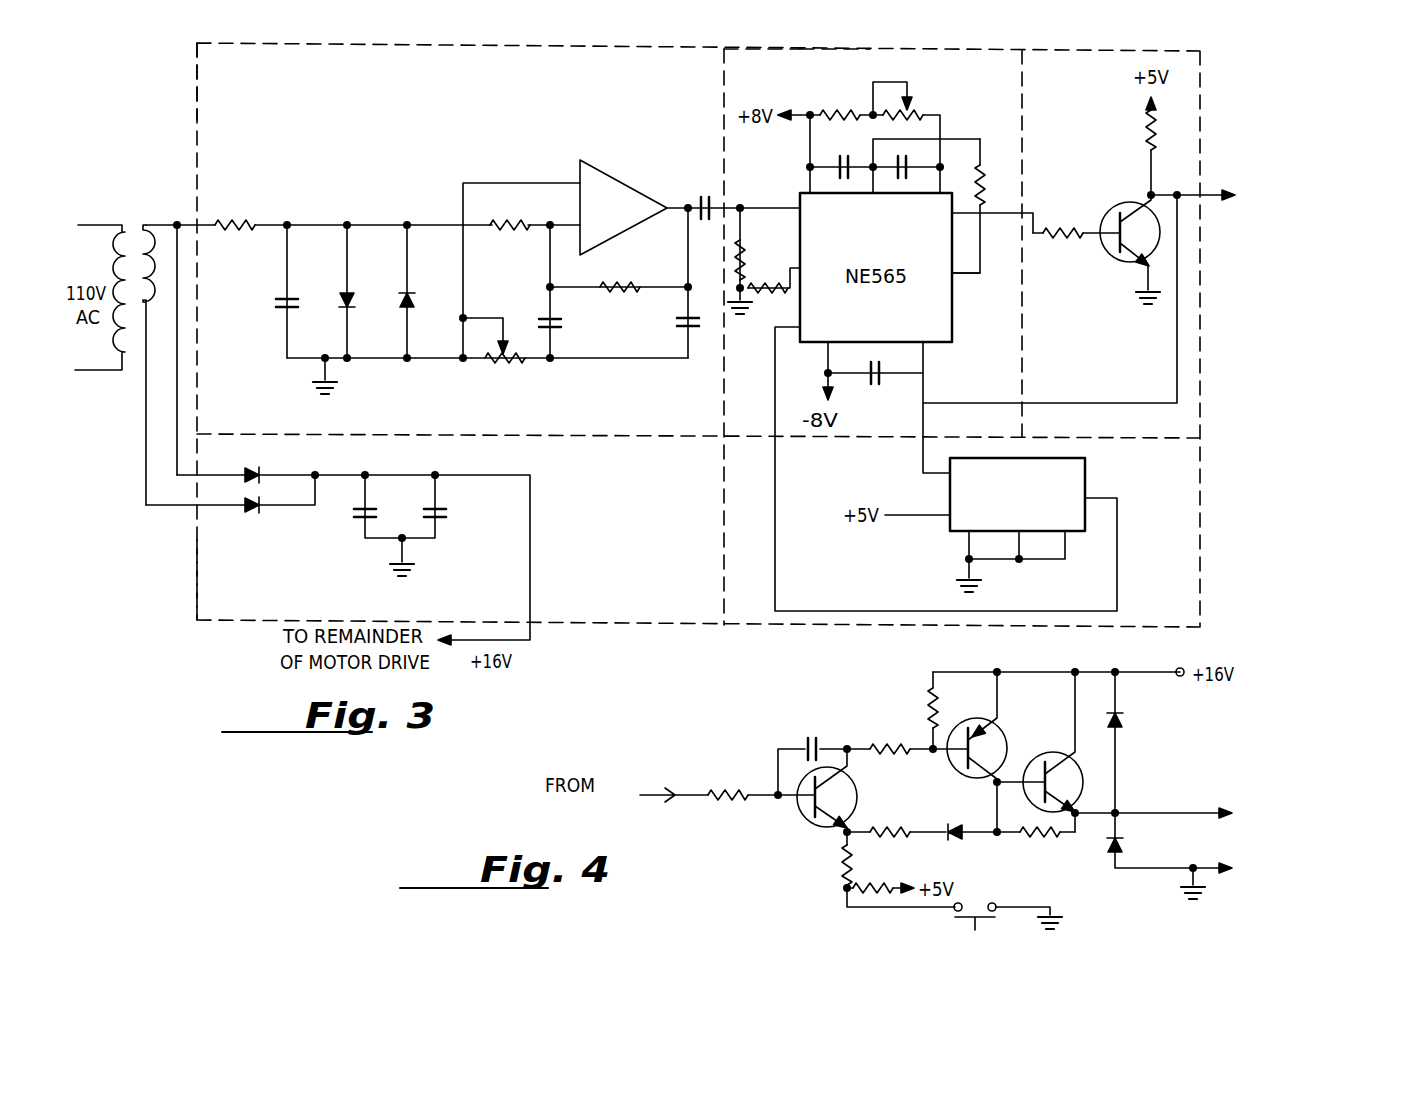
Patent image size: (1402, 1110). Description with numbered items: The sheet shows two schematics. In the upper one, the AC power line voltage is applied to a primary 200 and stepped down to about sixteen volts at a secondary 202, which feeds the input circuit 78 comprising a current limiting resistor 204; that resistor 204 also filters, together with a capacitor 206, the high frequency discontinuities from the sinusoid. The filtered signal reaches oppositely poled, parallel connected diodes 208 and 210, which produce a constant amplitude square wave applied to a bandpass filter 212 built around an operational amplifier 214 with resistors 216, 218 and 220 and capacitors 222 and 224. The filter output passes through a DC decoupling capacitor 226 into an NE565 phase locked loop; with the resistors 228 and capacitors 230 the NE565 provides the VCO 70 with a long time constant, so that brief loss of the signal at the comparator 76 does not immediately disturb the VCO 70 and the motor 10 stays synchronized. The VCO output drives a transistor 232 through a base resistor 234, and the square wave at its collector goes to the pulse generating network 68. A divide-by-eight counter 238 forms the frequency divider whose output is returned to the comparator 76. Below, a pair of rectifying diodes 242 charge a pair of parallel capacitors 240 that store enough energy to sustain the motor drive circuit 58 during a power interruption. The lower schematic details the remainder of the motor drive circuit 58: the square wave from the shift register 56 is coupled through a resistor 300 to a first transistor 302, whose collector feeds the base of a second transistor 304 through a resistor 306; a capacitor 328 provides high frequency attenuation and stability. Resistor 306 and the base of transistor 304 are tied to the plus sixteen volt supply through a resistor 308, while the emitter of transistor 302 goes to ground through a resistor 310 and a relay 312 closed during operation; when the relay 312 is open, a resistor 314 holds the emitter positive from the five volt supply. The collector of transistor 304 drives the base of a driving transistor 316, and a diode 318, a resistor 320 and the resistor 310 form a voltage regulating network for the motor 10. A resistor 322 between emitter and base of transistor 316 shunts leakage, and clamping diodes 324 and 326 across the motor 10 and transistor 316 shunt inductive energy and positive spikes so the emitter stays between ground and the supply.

In FIG. 3, the motor drive circuit 58 is at (192, 563).
In FIG. 3, the input circuit 78 is at (195, 87).
In FIG. 3, the comparator 76 is at (836, 47).
In FIG. 3, the VCO 70 is at (868, 47).
In FIG. 3, the primary 200 is at (128, 228).
In FIG. 3, the secondary 202 is at (140, 228).
In FIG. 3, the current limiting resistor 204 is at (252, 220).
In FIG. 3, the capacitor 206 is at (290, 298).
In FIG. 3, the diode 208 is at (352, 298).
In FIG. 3, the diode 210 is at (412, 298).
In FIG. 3, the bandpass filter 212 is at (559, 161).
In FIG. 3, the operational amplifier 214 is at (613, 178).
In FIG. 3, the resistor 216 is at (508, 232).
In FIG. 3, the resistor 218 is at (514, 366).
In FIG. 3, the resistor 220 is at (626, 296).
In FIG. 3, the capacitor 222 is at (560, 324).
In FIG. 3, the capacitor 224 is at (690, 338).
In FIG. 3, the DC decoupling capacitor 226 is at (702, 200).
In FIG. 3, the resistors 228 is at (756, 286).
In FIG. 3, the capacitors 230 is at (884, 158).
In FIG. 3, the transistor 232 is at (1112, 214).
In FIG. 3, the base resistor 234 is at (1060, 246).
In FIG. 3, the divide-by-eight counter 238 is at (1095, 486).
In FIG. 3, the parallel capacitors 240 is at (432, 505).
In FIG. 3, the rectifying diodes 242 is at (254, 474).
In FIG. 3, the pulse generating network 68 is at (1313, 212).
In FIG. 4, the shift register 56 is at (576, 813).
In FIG. 4, the motor 10 is at (1286, 841).
In FIG. 4, the resistor 300 is at (731, 784).
In FIG. 4, the first transistor 302 is at (808, 820).
In FIG. 4, the second transistor 304 is at (988, 740).
In FIG. 4, the resistor 306 is at (889, 754).
In FIG. 4, the resistor 308 is at (930, 703).
In FIG. 4, the resistor 310 is at (838, 858).
In FIG. 4, the relay 312 is at (984, 904).
In FIG. 4, the resistor 314 is at (870, 888).
In FIG. 4, the driving transistor 316 is at (1058, 762).
In FIG. 4, the diode 318 is at (954, 838).
In FIG. 4, the resistor 320 is at (880, 830).
In FIG. 4, the resistor 322 is at (1034, 838).
In FIG. 4, the clamping diode 324 is at (1124, 847).
In FIG. 4, the clamping diode 326 is at (1123, 718).
In FIG. 4, the capacitor 328 is at (805, 744).